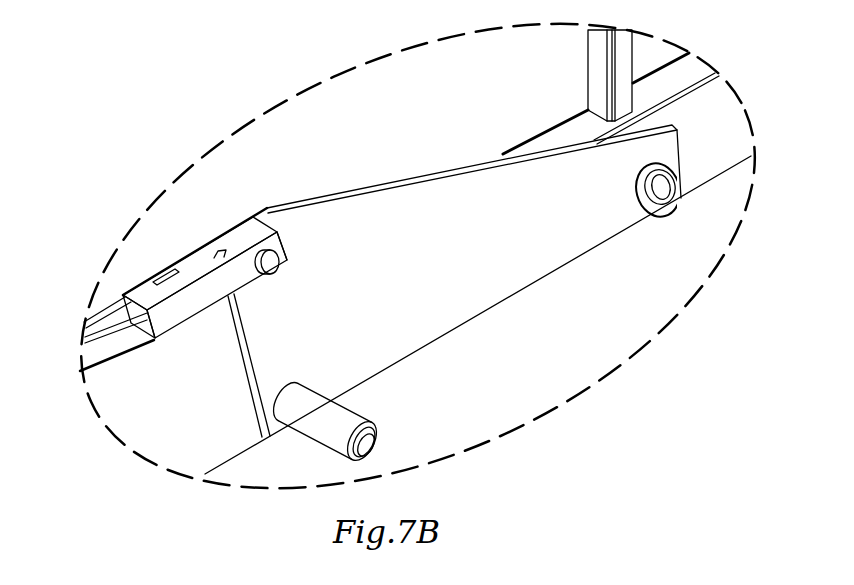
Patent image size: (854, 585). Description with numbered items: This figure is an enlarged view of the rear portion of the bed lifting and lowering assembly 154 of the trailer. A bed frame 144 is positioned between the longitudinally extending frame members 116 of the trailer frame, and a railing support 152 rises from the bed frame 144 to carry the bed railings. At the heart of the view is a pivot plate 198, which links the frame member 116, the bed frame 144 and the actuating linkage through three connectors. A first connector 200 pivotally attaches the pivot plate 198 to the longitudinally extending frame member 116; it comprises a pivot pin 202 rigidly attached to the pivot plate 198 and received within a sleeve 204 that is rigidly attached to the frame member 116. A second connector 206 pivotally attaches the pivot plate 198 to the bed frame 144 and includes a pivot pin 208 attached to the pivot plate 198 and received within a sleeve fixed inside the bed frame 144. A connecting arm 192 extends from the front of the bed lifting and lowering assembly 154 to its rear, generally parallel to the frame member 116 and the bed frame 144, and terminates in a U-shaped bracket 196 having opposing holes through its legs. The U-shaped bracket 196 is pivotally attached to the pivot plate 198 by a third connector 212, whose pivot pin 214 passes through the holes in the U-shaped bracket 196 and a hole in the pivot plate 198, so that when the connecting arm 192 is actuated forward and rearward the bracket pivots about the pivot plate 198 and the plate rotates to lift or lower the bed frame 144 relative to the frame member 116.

The longitudinally extending frame member 116 is at (648, 306).
The bed frame 144 is at (689, 68).
The railing support 152 is at (598, 52).
The bed lifting and lowering assembly 154 is at (340, 70).
The connecting arm 192 is at (130, 314).
The U-shaped bracket 196 is at (210, 290).
The pivot plate 198 is at (472, 302).
The first connector 200 is at (357, 420).
The pivot pin 202 is at (369, 445).
The sleeve 204 is at (341, 412).
The second connector 206 is at (686, 149).
The pivot pin 208 is at (664, 191).
The third connector 212 is at (286, 238).
The pivot pin 214 is at (282, 265).